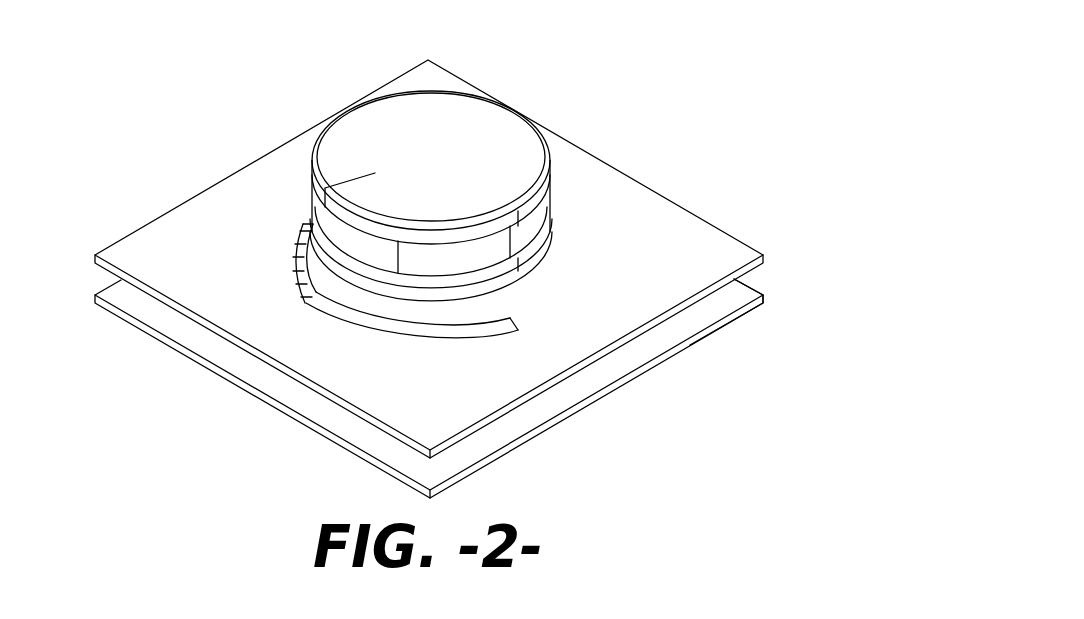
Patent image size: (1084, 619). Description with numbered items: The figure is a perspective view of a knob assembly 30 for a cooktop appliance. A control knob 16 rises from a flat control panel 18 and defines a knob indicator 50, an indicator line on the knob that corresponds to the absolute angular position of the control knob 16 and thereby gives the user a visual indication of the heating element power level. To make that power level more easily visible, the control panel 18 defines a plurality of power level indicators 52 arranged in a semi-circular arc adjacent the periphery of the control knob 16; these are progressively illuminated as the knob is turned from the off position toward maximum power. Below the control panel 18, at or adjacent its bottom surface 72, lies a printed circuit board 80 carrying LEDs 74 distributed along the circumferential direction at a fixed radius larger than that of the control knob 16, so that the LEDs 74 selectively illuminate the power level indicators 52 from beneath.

The control knob 16 is at (465, 117).
The control panel 18 is at (651, 222).
The knob assembly 30 is at (677, 97).
The knob indicator 50 is at (360, 173).
The power level indicators 52 is at (299, 239).
The bottom surface 72 is at (698, 302).
The LEDs 74 is at (293, 262).
The printed circuit board 80 is at (518, 418).